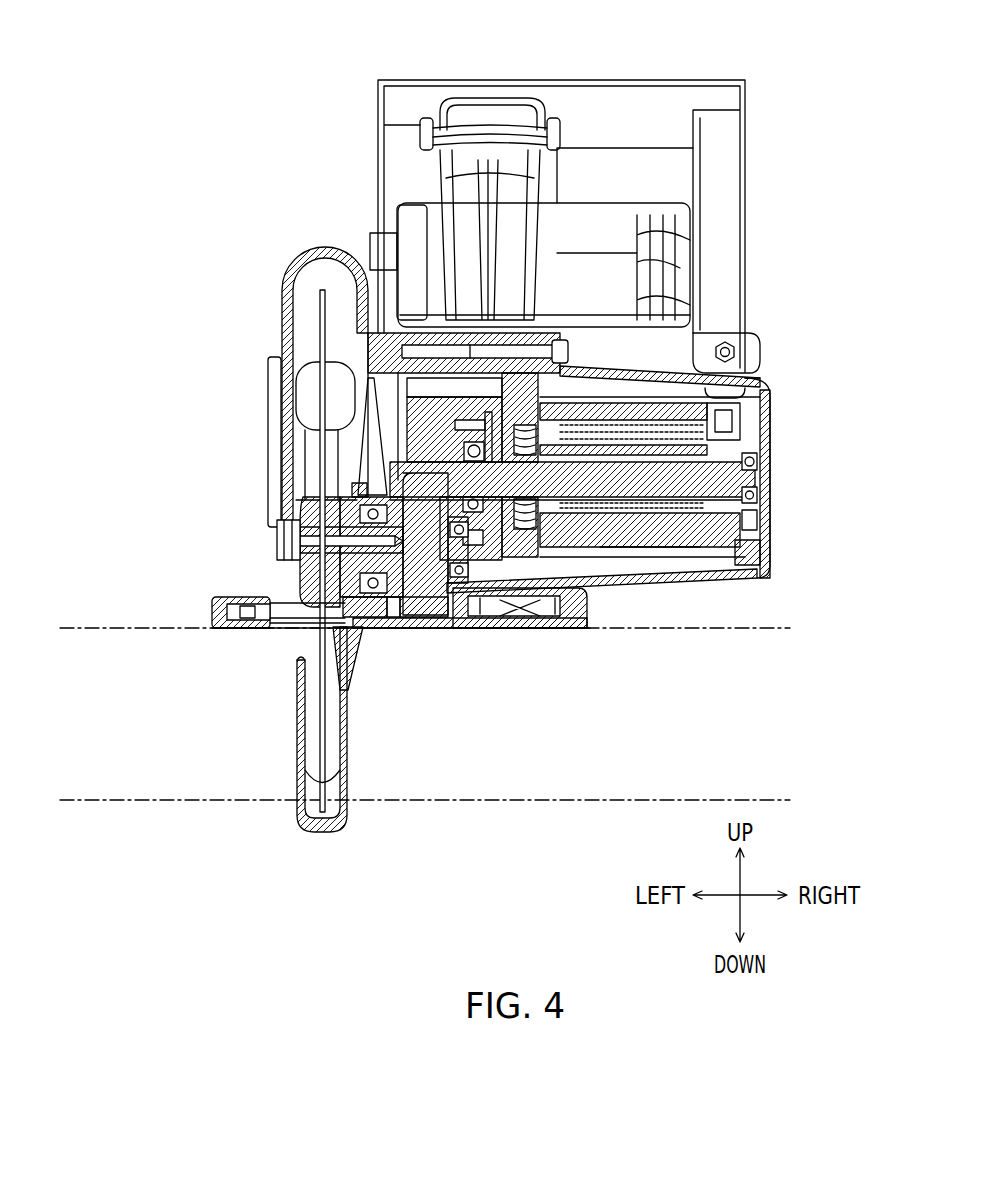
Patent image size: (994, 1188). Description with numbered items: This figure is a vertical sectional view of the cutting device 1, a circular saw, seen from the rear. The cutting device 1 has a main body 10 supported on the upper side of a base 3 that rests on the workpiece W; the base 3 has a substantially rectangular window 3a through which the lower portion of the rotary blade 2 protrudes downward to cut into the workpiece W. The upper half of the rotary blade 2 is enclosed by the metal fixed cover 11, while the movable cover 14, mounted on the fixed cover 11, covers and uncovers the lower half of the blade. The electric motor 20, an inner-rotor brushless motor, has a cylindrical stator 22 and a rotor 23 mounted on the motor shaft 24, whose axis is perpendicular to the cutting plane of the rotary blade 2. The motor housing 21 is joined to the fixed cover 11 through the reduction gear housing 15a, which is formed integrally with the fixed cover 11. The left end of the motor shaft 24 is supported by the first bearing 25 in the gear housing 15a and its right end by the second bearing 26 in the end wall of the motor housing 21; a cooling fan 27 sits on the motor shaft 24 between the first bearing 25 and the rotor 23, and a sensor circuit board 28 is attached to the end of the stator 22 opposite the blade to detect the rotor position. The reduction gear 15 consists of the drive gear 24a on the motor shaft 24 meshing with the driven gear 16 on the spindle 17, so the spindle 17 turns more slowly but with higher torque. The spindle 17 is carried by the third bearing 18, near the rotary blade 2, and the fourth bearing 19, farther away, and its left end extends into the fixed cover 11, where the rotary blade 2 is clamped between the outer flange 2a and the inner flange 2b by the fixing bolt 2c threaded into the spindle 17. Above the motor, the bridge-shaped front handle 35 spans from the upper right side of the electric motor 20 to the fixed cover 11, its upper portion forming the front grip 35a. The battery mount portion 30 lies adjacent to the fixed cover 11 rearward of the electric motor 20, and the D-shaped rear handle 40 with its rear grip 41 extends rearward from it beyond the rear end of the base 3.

The cutting device 1 is at (236, 162).
The rotary blade 2 is at (320, 740).
The outer flange 2a is at (283, 520).
The inner flange 2b is at (303, 494).
The fixing bolt 2c is at (280, 547).
The base 3 is at (588, 608).
The window 3a is at (275, 630).
The main body 10 is at (249, 315).
The fixed cover 11 is at (282, 290).
The movable cover 14 is at (297, 700).
The reduction gear 15 is at (366, 446).
The reduction gear housing 15a is at (372, 262).
The driven gear 16 is at (431, 630).
The spindle 17 is at (409, 618).
The third bearing 18 is at (377, 592).
The fourth bearing 19 is at (472, 622).
The electric motor 20 is at (789, 456).
The motor housing 21 is at (592, 480).
The stator 22 is at (762, 540).
The rotor 23 is at (745, 388).
The motor shaft 24 is at (640, 400).
The drive gear 24a is at (400, 463).
The first bearing 25 is at (427, 458).
The second bearing 26 is at (768, 463).
The cooling fan 27 is at (518, 405).
The sensor circuit board 28 is at (748, 400).
The battery mount portion 30 is at (592, 218).
The front handle 35 is at (466, 71).
The front grip 35a is at (575, 112).
The rear handle 40 is at (512, 141).
The rear grip 41 is at (418, 255).
The workpiece W is at (100, 640).